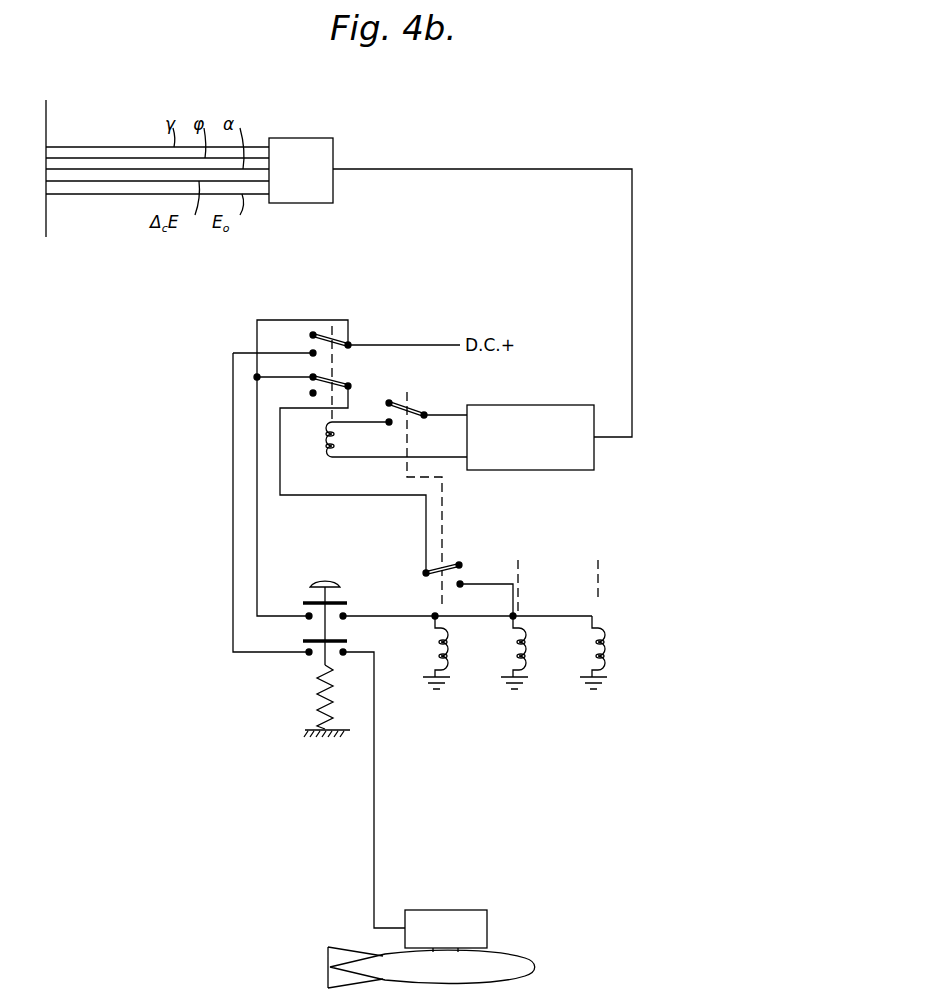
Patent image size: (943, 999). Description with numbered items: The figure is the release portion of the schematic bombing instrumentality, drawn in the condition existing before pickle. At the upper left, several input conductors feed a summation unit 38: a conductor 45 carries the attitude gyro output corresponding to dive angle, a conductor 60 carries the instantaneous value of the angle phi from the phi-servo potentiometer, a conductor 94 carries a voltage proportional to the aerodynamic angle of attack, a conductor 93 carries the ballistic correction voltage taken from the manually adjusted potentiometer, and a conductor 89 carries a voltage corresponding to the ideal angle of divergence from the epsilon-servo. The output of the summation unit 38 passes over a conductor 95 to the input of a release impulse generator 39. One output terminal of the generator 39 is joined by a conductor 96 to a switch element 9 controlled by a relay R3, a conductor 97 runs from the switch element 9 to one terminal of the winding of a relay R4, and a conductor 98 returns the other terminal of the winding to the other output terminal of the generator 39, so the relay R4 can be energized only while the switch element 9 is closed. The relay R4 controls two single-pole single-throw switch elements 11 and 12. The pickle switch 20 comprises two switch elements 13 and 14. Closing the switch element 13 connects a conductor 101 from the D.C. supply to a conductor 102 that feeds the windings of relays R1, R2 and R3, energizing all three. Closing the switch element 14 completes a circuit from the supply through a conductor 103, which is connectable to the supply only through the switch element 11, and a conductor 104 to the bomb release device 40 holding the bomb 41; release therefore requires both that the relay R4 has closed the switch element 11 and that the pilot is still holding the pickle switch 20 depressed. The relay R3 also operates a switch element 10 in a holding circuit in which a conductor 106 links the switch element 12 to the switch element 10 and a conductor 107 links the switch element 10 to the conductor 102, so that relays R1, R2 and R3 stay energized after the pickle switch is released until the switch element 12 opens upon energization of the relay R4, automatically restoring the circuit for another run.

The conductor 45 is at (73, 147).
The conductor 60 is at (101, 158).
The conductor 94 is at (128, 169).
The conductor 93 is at (89, 181).
The conductor 89 is at (118, 194).
The summation unit 38 is at (312, 180).
The conductor 95 is at (578, 169).
The switch element 11 is at (327, 340).
The switch element 12 is at (322, 376).
The conductor 97 is at (367, 420).
The switch element 9 is at (391, 402).
The conductor 96 is at (450, 414).
The release impulse generator 39 is at (541, 447).
The relay R4 is at (333, 458).
The conductor 98 is at (384, 458).
The conductor 103 is at (233, 501).
The conductor 101 is at (260, 524).
The conductor 106 is at (356, 496).
The pickle switch 20 is at (324, 569).
The switch element 13 is at (346, 603).
The switch element 14 is at (346, 641).
The conductor 102 is at (390, 616).
The switch element 10 is at (450, 564).
The conductor 107 is at (483, 584).
The relay R3 is at (439, 664).
The relay R2 is at (517, 664).
The relay R1 is at (596, 664).
The conductor 104 is at (378, 797).
The bomb release device 40 is at (457, 935).
The bomb 41 is at (454, 977).